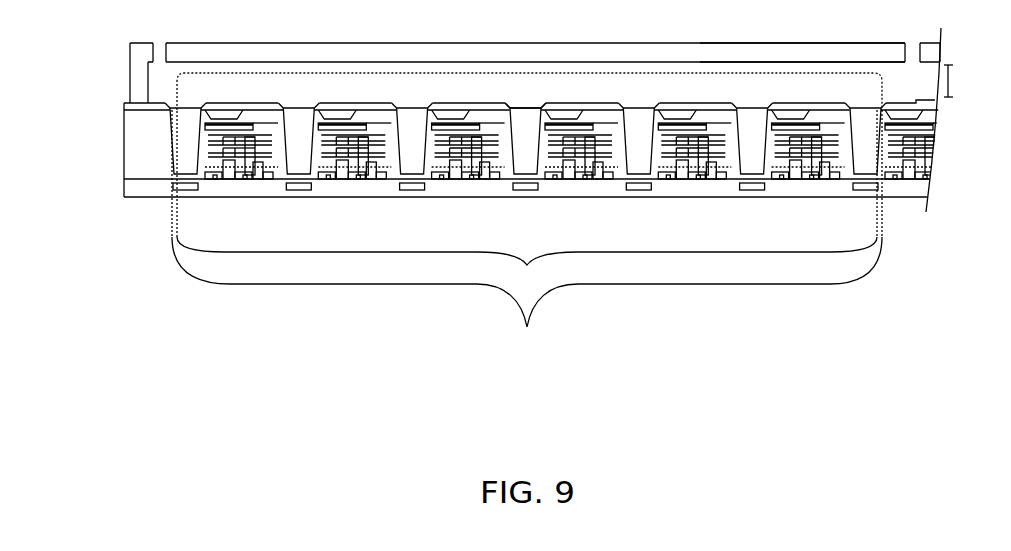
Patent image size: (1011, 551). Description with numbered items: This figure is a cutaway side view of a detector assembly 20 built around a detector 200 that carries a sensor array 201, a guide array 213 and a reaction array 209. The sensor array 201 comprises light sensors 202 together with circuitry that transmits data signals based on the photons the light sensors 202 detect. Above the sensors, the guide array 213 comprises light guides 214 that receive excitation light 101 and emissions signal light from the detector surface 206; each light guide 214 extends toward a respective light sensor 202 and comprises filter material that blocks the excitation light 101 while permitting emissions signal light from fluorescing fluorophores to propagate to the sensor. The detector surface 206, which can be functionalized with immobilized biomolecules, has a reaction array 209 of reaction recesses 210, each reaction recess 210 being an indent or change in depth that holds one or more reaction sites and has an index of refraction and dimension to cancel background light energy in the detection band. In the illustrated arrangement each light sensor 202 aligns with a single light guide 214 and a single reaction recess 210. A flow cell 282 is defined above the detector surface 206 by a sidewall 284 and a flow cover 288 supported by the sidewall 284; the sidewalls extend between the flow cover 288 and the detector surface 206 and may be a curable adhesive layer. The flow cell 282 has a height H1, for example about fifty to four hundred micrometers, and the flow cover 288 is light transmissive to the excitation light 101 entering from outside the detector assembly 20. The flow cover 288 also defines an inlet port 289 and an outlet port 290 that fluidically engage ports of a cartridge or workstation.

The detector assembly 20 is at (76, 43).
The detector 200 is at (121, 102).
The sensor array 201 is at (527, 200).
The light sensor 202 is at (405, 190).
The detector surface 206 is at (426, 107).
The reaction array 209 is at (540, 43).
The reaction recess 210 is at (410, 105).
The guide array 213 is at (527, 231).
The light guide 214 is at (423, 146).
The flow cell 282 is at (692, 92).
The sidewall 284 is at (129, 75).
The flow cover 288 is at (815, 52).
The inlet port 289 is at (157, 42).
The outlet port 290 is at (919, 36).
The excitation light 101 is at (525, 100).
The height H1 is at (953, 80).